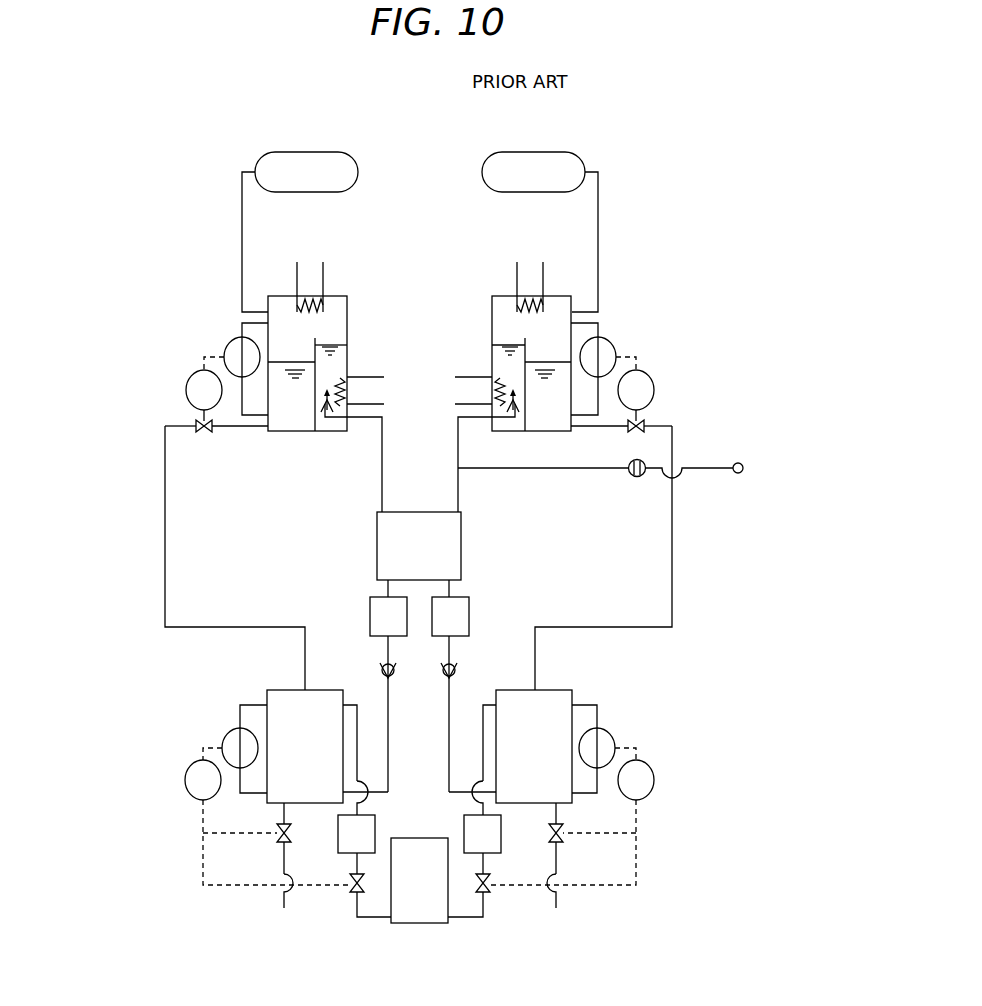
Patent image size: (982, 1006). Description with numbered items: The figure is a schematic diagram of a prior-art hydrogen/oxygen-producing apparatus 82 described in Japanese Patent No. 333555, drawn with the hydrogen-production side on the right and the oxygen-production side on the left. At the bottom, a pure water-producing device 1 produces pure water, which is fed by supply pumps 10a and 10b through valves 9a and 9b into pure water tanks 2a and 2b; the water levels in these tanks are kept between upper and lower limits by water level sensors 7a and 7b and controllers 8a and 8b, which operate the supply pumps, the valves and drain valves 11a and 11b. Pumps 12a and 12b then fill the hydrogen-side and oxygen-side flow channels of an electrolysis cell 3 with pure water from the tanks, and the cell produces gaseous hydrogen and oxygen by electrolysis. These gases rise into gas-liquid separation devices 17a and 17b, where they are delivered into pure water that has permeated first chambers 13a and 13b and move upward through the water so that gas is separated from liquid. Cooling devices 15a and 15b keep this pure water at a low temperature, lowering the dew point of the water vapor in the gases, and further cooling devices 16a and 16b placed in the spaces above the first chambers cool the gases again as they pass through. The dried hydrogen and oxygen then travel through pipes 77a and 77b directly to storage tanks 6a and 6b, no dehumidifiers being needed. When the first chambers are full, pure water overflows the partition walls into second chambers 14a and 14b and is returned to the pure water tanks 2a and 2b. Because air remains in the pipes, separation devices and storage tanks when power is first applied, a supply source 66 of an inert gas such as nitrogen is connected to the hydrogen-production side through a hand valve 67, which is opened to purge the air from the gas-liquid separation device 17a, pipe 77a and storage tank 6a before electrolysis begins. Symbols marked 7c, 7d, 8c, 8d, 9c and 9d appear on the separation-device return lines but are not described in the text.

The hydrogen/oxygen-producing apparatus 82 is at (386, 110).
The pure water-producing device 1 is at (430, 902).
The pure water tank 2a is at (548, 718).
The pure water tank 2b is at (290, 709).
The electrolysis cell 3 is at (430, 566).
The storage tank 6a is at (548, 162).
The storage tank 6b is at (257, 162).
The water level sensor 7a is at (607, 747).
The water level sensor 7b is at (238, 742).
The pump 7c is at (597, 352).
The pump 7d is at (237, 352).
The controller 8a is at (637, 780).
The controller 8b is at (203, 773).
The filter 8c is at (640, 382).
The filter 8d is at (205, 387).
The valve 9a is at (485, 885).
The valve 9b is at (352, 880).
The valve 9c is at (643, 427).
The valve 9d is at (198, 428).
The supply pump 10a is at (490, 839).
The supply pump 10b is at (352, 840).
The drain valve 11a is at (558, 832).
The drain valve 11b is at (278, 832).
The pump 12a is at (467, 622).
The pump 12b is at (378, 625).
The first chamber 13a is at (518, 362).
The first chamber 13b is at (328, 370).
The second chamber 14a is at (552, 397).
The second chamber 14b is at (290, 388).
The cooling device 15a is at (477, 377).
The cooling device 15b is at (368, 377).
The cooling device 16a is at (547, 270).
The cooling device 16b is at (290, 272).
The gas-liquid separation device 17a is at (567, 330).
The gas-liquid separation device 17b is at (292, 325).
The supply source 66 is at (742, 473).
The hand valve 67 is at (645, 472).
The pipe 77a is at (598, 212).
The pipe 77b is at (240, 228).